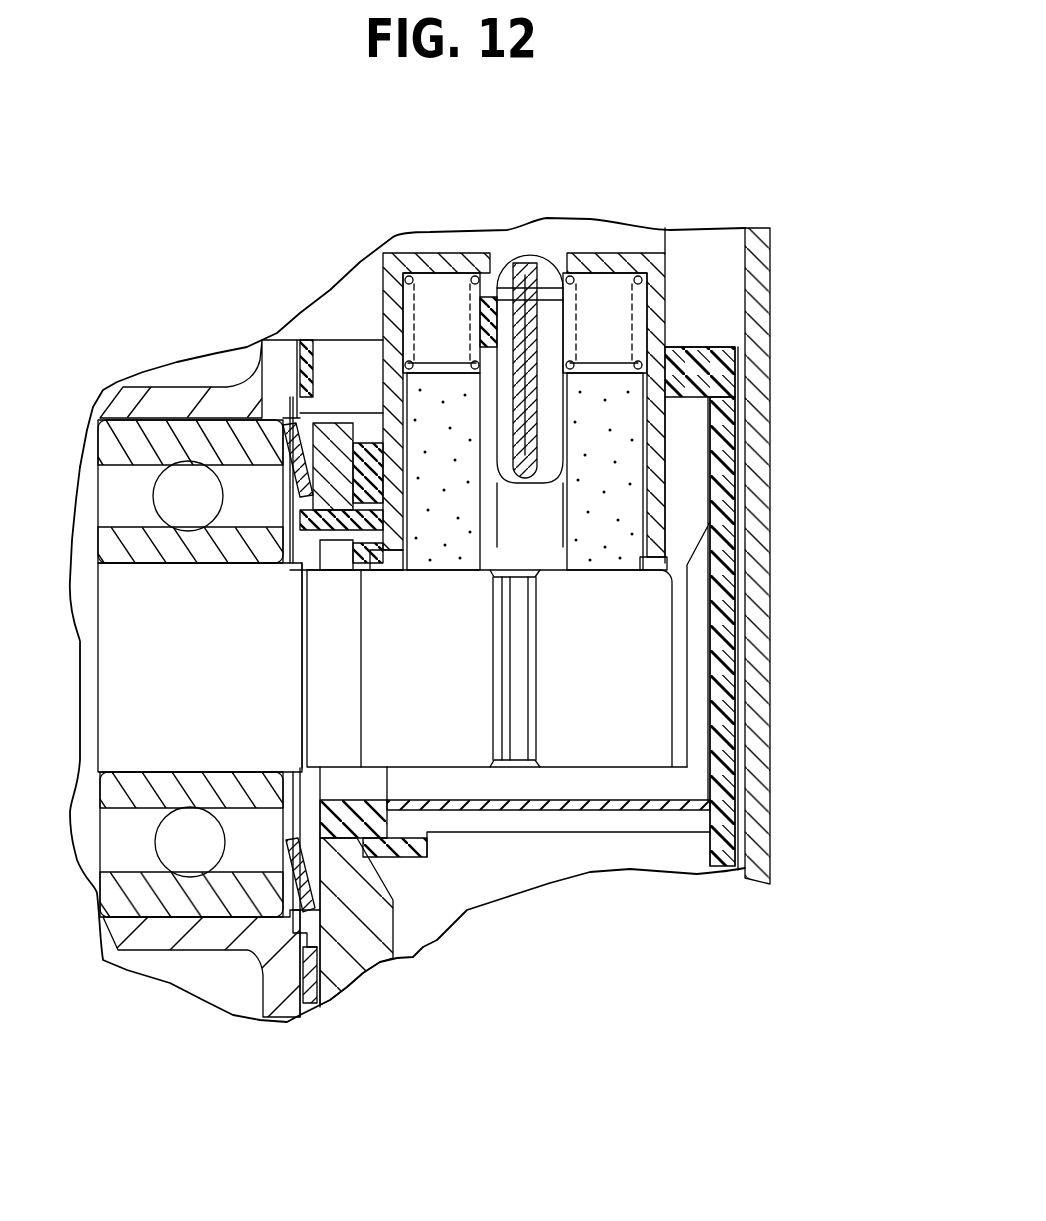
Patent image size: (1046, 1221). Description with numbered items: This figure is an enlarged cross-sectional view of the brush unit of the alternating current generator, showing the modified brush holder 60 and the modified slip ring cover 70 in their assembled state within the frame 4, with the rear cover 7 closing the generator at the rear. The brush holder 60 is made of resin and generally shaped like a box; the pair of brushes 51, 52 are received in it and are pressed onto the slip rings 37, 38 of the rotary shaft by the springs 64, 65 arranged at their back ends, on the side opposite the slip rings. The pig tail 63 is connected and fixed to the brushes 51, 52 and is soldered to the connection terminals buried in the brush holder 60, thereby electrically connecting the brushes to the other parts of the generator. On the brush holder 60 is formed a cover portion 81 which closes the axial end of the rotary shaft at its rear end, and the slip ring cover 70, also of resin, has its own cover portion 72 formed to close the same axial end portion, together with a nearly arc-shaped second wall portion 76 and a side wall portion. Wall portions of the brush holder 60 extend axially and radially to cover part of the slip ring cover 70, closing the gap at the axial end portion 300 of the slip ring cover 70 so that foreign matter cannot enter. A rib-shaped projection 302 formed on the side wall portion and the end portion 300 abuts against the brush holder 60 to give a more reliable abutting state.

The frame 4 is at (377, 957).
The rear cover 7 is at (763, 858).
The slip ring 37 is at (459, 746).
The slip ring 38 is at (653, 750).
The brush 51 is at (460, 498).
The brush 52 is at (623, 543).
The brush holder 60 is at (698, 318).
The pig tail 63 is at (657, 287).
The spring 64 is at (413, 297).
The spring 65 is at (533, 367).
The slip ring cover 70 is at (563, 848).
The cover portion 72 is at (713, 631).
The second wall portion 76 is at (604, 806).
The cover portion 81 is at (729, 768).
The end portion 300 is at (340, 470).
The rib-shaped projection 302 is at (313, 453).